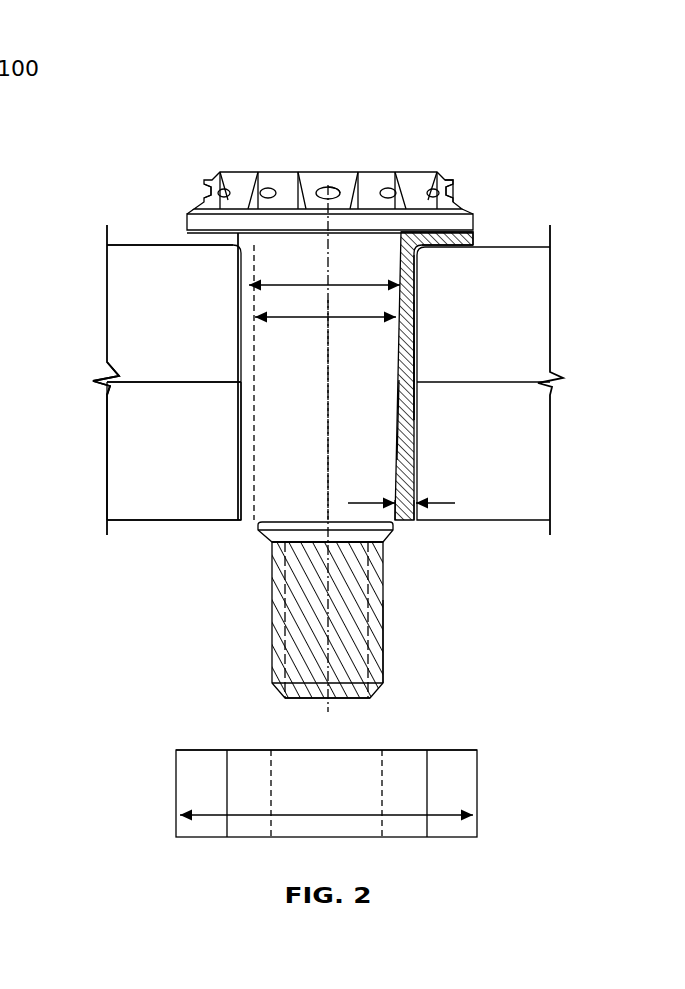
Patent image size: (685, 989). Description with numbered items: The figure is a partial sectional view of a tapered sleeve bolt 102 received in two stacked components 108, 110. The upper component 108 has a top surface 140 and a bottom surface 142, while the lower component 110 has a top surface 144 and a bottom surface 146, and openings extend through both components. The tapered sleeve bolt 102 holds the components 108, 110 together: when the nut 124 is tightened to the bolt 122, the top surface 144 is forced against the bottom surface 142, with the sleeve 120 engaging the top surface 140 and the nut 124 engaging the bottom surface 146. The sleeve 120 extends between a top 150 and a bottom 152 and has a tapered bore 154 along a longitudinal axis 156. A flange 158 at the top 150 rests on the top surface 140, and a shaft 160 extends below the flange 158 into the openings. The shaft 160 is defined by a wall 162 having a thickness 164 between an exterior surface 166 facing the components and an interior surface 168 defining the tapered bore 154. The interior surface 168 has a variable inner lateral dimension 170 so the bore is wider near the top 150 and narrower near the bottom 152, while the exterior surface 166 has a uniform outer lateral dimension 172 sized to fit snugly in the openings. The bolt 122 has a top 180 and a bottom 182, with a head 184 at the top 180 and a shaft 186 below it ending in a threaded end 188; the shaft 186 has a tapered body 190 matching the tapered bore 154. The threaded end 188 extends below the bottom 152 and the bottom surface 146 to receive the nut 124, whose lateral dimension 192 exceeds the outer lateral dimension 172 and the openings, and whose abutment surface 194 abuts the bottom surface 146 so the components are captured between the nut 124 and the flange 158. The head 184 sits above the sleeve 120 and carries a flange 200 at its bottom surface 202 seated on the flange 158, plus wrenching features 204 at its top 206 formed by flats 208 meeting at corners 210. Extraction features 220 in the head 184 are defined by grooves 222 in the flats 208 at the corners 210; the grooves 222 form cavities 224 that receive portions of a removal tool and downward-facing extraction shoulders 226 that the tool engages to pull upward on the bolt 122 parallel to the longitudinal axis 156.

The tapered sleeve bolt 102 is at (497, 84).
The component 108 is at (116, 305).
The component 110 is at (112, 460).
The sleeve 120 is at (403, 447).
The bolt 122 is at (376, 617).
The nut 124 is at (465, 795).
The top surface 140 is at (127, 244).
The bottom surface 142 is at (143, 384).
The top surface 144 is at (104, 380).
The bottom surface 146 is at (137, 522).
The top 150 is at (447, 232).
The bottom 152 is at (250, 528).
The tapered bore 154 is at (455, 503).
The longitudinal axis 156 is at (325, 484).
The flange 158 is at (456, 246).
The shaft 160 is at (415, 318).
The wall 162 is at (400, 527).
The thickness 164 is at (430, 525).
The exterior surface 166 is at (402, 344).
The interior surface 168 is at (416, 373).
The inner lateral dimension 170 is at (300, 318).
The outer lateral dimension 172 is at (291, 285).
The top 180 is at (368, 186).
The bottom 182 is at (344, 698).
The head 184 is at (235, 190).
The shaft 186 is at (360, 540).
The threaded end 188 is at (375, 672).
The tapered body 190 is at (370, 419).
The lateral dimension 192 is at (258, 820).
The abutment surface 194 is at (450, 750).
The flange 200 is at (240, 210).
The bottom surface 202 is at (222, 228).
The wrenching features 204 is at (284, 184).
The top 206 is at (432, 178).
The flats 208 is at (376, 187).
The corners 210 is at (413, 177).
The extraction features 220 is at (201, 188).
The grooves 222 is at (339, 183).
The cavities 224 is at (325, 190).
The extraction shoulders 226 is at (448, 188).